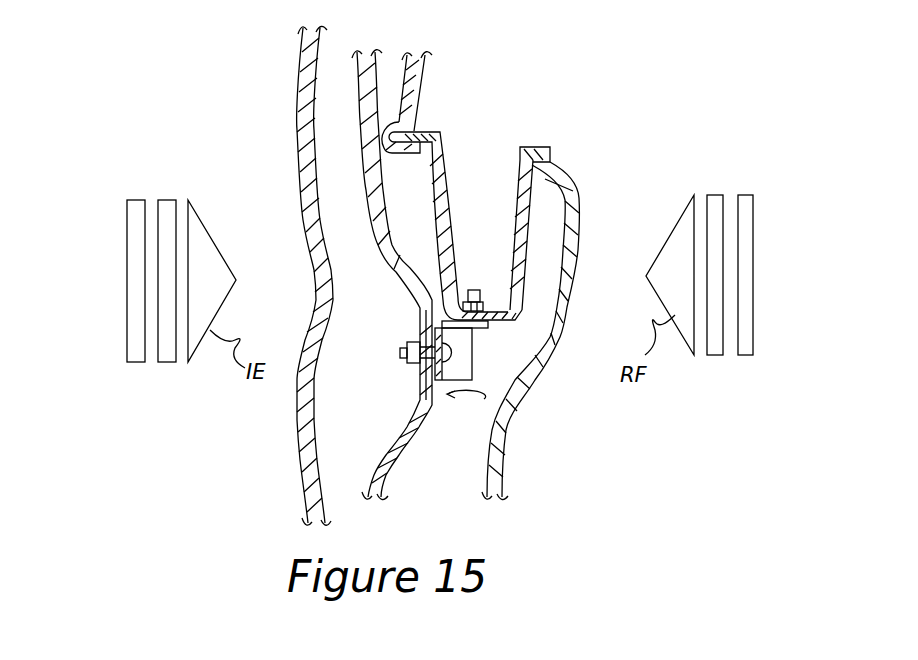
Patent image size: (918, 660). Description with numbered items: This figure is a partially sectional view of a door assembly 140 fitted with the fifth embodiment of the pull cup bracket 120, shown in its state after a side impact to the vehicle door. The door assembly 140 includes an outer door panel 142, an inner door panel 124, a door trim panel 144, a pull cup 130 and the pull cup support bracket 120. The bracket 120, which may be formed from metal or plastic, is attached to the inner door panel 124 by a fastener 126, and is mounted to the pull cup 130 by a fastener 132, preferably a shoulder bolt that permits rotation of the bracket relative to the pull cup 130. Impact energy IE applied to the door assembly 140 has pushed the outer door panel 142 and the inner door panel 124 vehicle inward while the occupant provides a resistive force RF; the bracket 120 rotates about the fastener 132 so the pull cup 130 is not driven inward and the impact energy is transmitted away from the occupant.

The door assembly 140 is at (238, 171).
The outer door panel 142 is at (300, 443).
The door trim panel 144 is at (503, 476).
The inner door panel 124 is at (378, 256).
The pull cup 130 is at (445, 185).
The fastener 132 is at (480, 292).
The pull cup bracket 120 is at (462, 352).
The fastener 126 is at (400, 362).